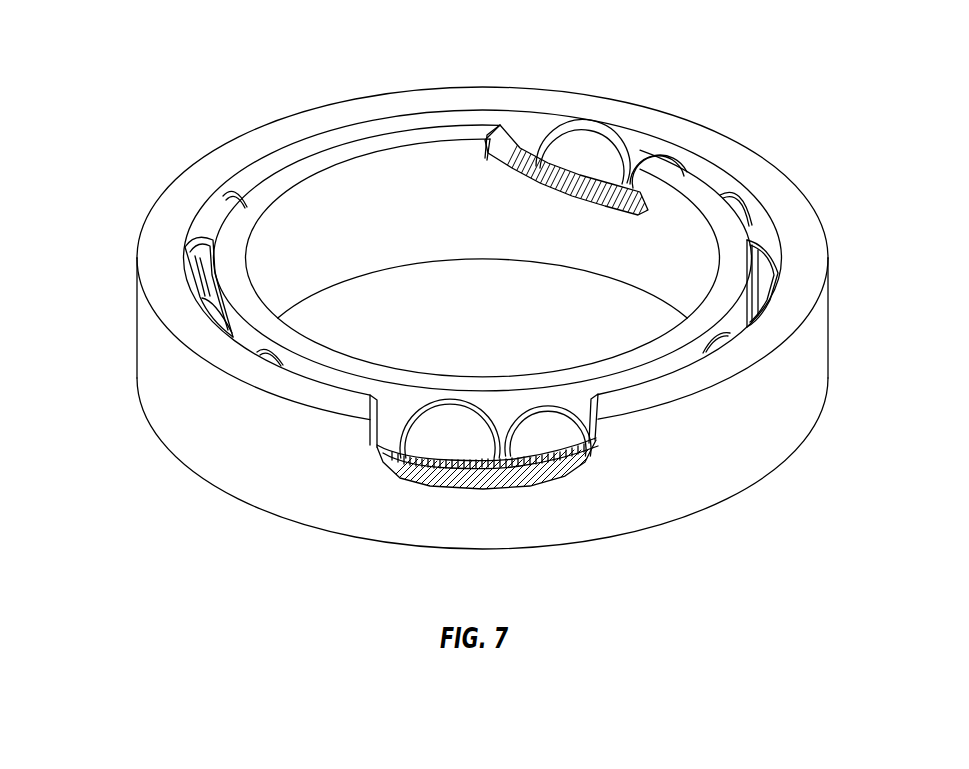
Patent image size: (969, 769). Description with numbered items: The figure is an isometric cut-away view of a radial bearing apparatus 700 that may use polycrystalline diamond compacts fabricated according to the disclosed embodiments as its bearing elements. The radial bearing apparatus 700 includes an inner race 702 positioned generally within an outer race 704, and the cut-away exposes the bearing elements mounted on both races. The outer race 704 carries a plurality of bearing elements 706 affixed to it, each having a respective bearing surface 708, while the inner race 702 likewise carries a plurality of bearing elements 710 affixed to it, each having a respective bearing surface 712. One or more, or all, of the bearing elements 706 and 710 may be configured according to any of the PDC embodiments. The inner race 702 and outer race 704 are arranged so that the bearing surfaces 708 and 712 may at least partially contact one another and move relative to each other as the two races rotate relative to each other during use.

The radial bearing apparatus 700 is at (657, 48).
The inner race 702 is at (268, 192).
The outer race 704 is at (193, 495).
The bearing elements 706 is at (452, 405).
The bearing surfaces 708 is at (453, 437).
The bearing elements 710 is at (605, 152).
The bearing surfaces 712 is at (585, 162).